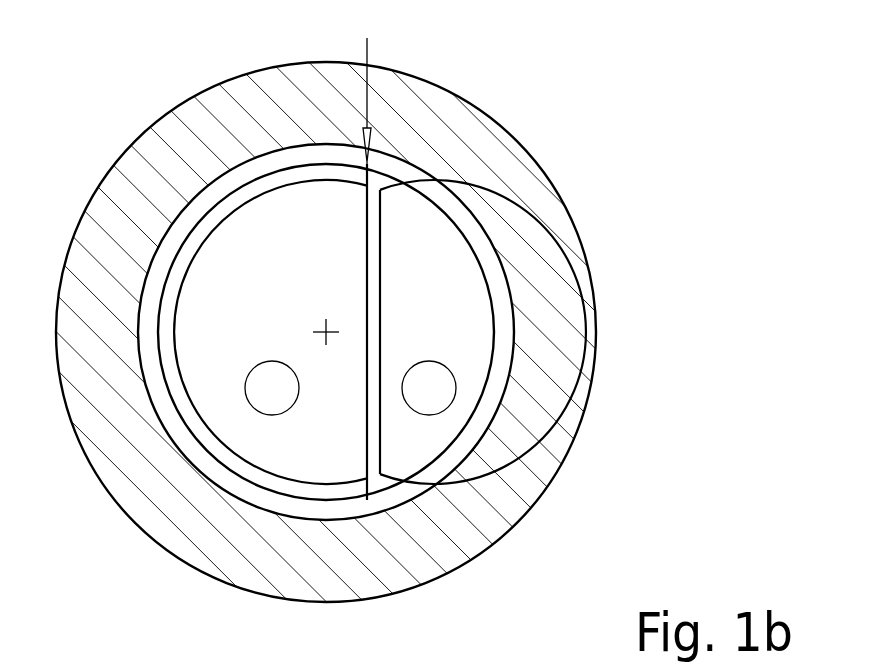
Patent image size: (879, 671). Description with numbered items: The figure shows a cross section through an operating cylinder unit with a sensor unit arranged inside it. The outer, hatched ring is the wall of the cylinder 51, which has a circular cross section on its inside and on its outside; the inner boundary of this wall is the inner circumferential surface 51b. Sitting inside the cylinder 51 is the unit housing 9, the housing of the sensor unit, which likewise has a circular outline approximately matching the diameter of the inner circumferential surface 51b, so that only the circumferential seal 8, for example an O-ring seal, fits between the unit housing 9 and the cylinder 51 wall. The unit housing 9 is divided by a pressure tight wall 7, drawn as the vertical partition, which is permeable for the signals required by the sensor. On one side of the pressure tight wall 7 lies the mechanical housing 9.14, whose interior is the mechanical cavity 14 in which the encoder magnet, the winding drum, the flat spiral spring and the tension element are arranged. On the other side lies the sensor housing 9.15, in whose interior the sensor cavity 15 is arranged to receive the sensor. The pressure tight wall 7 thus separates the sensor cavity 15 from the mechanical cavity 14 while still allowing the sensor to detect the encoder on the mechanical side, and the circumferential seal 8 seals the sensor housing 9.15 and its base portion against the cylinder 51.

The pressure tight wall 7 is at (373, 333).
The circumferential seal 8 is at (484, 247).
The unit housing 9 is at (366, 85).
The mechanical housing 9.14 is at (242, 197).
The sensor housing 9.15 is at (440, 217).
The mechanical cavity 14 is at (272, 388).
The sensor cavity 15 is at (429, 388).
The cylinder 51 is at (326, 332).
The inner circumferential surface 51b is at (515, 349).